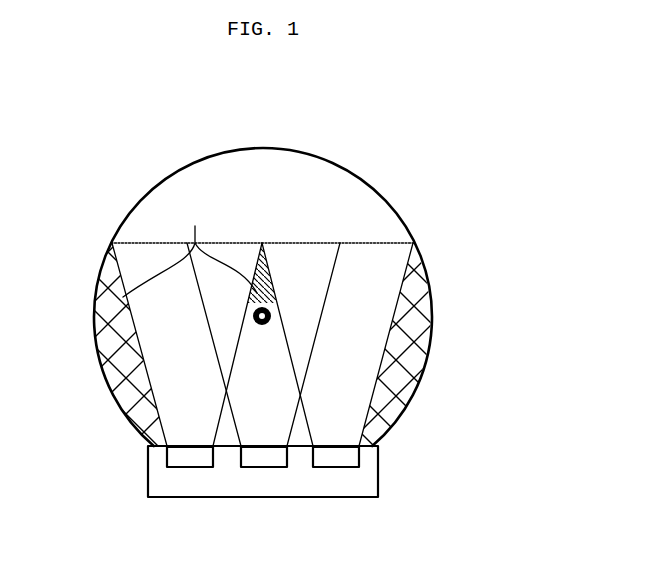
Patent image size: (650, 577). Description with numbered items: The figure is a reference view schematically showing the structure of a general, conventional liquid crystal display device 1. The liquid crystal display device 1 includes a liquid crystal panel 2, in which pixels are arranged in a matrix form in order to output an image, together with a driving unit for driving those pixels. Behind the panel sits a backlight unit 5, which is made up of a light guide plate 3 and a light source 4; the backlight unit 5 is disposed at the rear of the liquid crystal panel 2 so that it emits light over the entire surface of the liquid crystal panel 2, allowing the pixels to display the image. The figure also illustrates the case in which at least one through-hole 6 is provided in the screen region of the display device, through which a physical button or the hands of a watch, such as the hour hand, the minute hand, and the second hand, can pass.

The liquid crystal display device 1 is at (103, 134).
The liquid crystal panel 2 is at (355, 202).
The light guide plate 3 is at (410, 400).
The light source 4 is at (358, 462).
The backlight unit 5 is at (152, 511).
The through-hole 6 is at (278, 316).